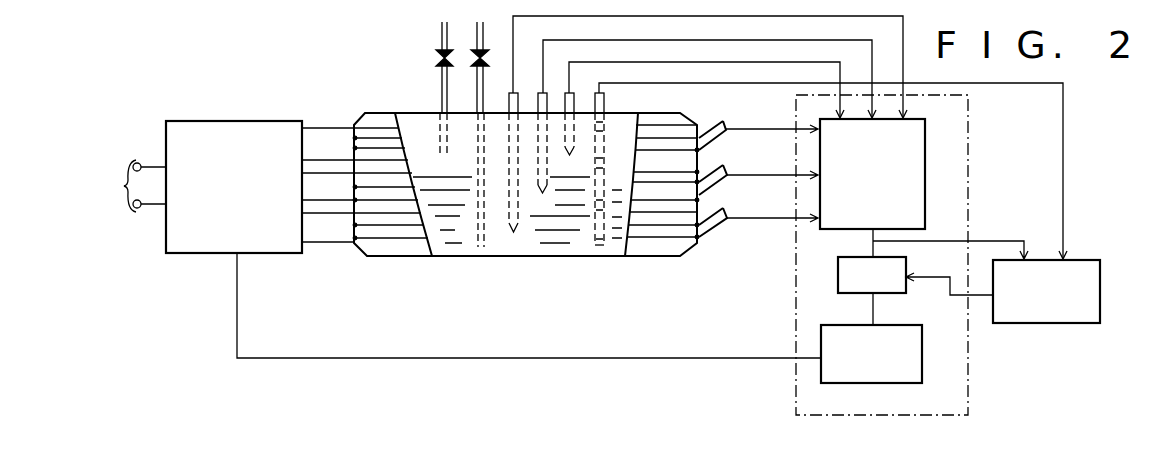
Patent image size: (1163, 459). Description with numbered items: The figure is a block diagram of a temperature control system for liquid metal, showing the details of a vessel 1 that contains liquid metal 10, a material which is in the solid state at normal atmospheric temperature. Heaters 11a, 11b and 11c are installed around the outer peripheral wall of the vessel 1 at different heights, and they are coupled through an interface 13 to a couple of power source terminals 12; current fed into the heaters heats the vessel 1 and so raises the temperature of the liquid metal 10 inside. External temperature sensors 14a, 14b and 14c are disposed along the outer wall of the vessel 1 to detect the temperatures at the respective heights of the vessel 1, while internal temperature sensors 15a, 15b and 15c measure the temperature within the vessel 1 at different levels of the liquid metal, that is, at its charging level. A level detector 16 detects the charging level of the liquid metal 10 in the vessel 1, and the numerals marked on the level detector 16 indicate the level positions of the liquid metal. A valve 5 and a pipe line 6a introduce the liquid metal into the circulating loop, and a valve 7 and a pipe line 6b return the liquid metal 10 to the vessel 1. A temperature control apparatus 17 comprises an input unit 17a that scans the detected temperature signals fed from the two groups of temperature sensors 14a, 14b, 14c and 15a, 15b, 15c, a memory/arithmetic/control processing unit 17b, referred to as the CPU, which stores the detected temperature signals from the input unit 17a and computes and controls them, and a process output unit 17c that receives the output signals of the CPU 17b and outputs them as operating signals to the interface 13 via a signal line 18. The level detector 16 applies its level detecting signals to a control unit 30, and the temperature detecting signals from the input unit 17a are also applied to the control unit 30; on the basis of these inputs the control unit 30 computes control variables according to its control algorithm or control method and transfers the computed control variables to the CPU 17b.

The vessel 1 is at (693, 256).
The valve 5 is at (470, 56).
The pipe line 6a is at (469, 161).
The pipe line 6b is at (440, 86).
The valve 7 is at (433, 56).
The liquid metal 10 is at (550, 238).
The heater 11a is at (330, 128).
The heater 11b is at (318, 173).
The heater 11c is at (318, 213).
The power source terminals 12 is at (133, 186).
The interface 13 is at (203, 121).
The external temperature sensor 14a is at (717, 128).
The external temperature sensor 14b is at (717, 172).
The external temperature sensor 14c is at (717, 216).
The internal temperature sensor 15a is at (571, 93).
The internal temperature sensor 15b is at (544, 93).
The internal temperature sensor 15c is at (515, 93).
The level detector 16 is at (604, 100).
The temperature control apparatus 17 is at (969, 160).
The input unit 17a is at (934, 220).
The memory/arithmetic/control processing unit (CPU) 17b is at (906, 260).
The process output unit 17c is at (905, 325).
The signal line 18 is at (475, 358).
The control unit 30 is at (1100, 306).